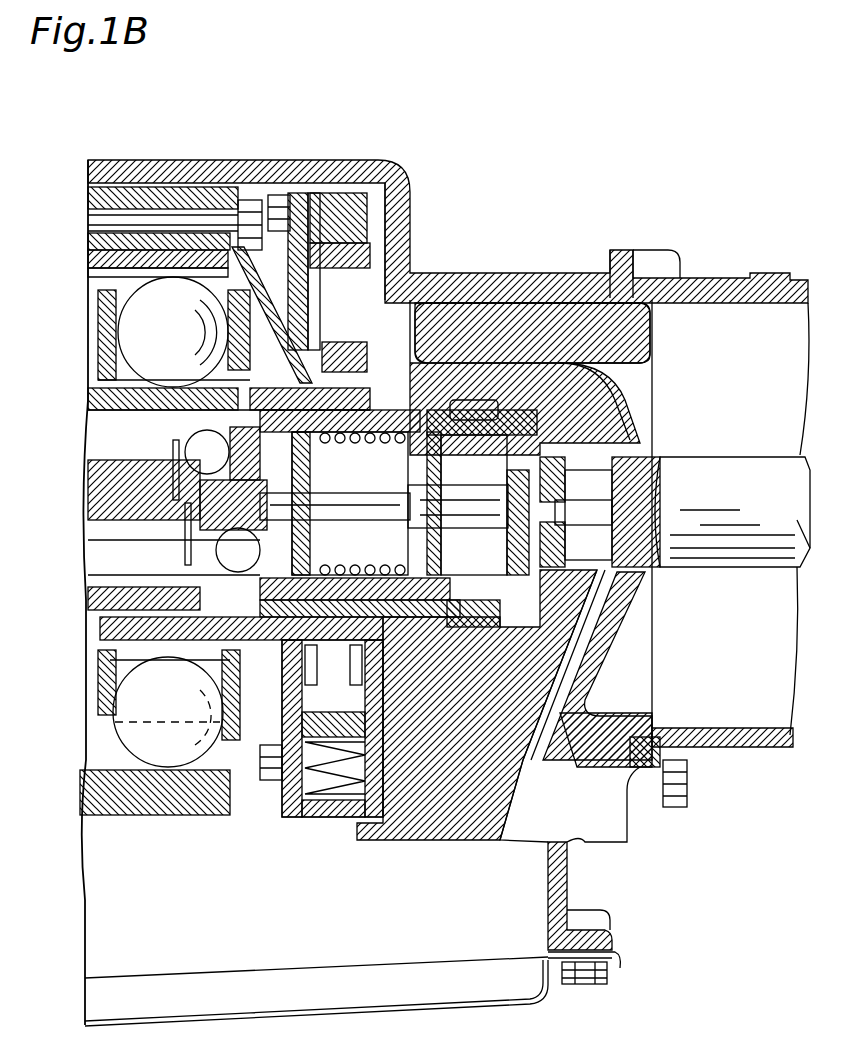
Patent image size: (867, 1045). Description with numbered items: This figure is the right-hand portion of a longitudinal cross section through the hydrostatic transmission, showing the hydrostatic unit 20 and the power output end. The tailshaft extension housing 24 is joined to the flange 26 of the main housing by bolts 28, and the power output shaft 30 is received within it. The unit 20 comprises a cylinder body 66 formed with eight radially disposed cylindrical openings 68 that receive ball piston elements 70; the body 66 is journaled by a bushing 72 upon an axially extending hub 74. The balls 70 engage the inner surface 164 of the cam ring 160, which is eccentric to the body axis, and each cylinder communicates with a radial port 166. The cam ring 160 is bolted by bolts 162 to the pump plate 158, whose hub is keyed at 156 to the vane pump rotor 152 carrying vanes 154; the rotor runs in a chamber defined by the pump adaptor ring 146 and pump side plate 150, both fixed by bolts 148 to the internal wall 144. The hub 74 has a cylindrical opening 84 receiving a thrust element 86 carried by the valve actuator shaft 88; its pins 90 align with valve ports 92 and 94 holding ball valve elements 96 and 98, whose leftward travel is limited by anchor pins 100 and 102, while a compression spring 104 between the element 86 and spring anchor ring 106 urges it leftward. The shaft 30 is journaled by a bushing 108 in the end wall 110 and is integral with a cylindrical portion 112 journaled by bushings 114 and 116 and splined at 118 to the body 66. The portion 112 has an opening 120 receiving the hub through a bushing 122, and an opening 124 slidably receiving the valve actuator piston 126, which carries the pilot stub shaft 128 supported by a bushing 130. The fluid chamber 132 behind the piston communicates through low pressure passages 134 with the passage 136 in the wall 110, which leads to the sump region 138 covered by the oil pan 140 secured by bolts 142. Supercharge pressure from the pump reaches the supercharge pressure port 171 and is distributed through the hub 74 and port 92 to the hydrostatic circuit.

The hydrostatic unit 20 is at (98, 300).
The tailshaft extension housing 24 is at (722, 278).
The flange 26 is at (620, 250).
The bolts 28 is at (690, 780).
The power output shaft 30 is at (765, 457).
The cylinder body 66 is at (100, 640).
The cylindrical openings 68 is at (98, 680).
The ball piston elements 70 is at (125, 728).
The bushing 72 is at (90, 388).
The hub 74 is at (88, 405).
The cylindrical opening 84 is at (410, 452).
The thrust element 86 is at (310, 490).
The valve actuator shaft 88 is at (370, 522).
The pins 90 is at (300, 545).
The valve port 92 is at (225, 445).
The valve port 94 is at (242, 530).
The ball valve element 96 is at (88, 468).
The ball valve element 98 is at (185, 540).
The anchor pin 100 is at (173, 445).
The anchor pin 102 is at (180, 550).
The compression spring 104 is at (441, 538).
The spring anchor ring 106 is at (441, 562).
The bushing 108 is at (640, 432).
The end wall 110 is at (595, 375).
The cylindrical portion 112 is at (480, 365).
The bushing 114 is at (540, 355).
The bushing 116 is at (465, 363).
The spline 118 is at (345, 342).
The cylindrical opening 120 is at (335, 443).
The bushing 122 is at (425, 630).
The cylindrical opening 124 is at (474, 409).
The valve actuator piston 126 is at (507, 470).
The pilot stub shaft 128 is at (660, 490).
The bushing 130 is at (660, 470).
The fluid chamber 132 is at (495, 603).
The low pressure passages 134 is at (650, 525).
The low pressure passage 136 is at (605, 612).
The sump region 138 is at (567, 885).
The oil pan 140 is at (510, 1003).
The bolts 142 is at (585, 985).
The internal wall 144 is at (405, 200).
The pump adaptor ring 146 is at (335, 193).
The bolts 148 is at (280, 195).
The pump side plate 150 is at (308, 290).
The vane pump rotor 152 is at (425, 333).
The vanes 154 is at (405, 255).
The key 156 is at (400, 660).
The pump plate 158 is at (320, 300).
The cam ring 160 is at (88, 190).
The bolts 162 is at (250, 200).
The inner surface 164 is at (88, 272).
The radial port 166 is at (170, 370).
The supercharge pressure port 171 is at (547, 665).